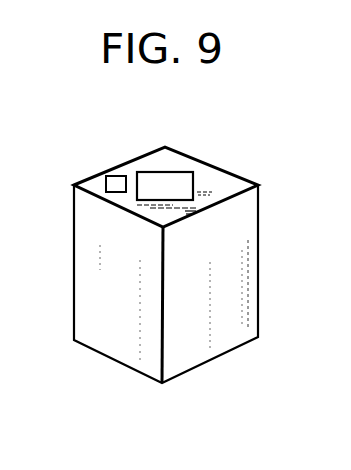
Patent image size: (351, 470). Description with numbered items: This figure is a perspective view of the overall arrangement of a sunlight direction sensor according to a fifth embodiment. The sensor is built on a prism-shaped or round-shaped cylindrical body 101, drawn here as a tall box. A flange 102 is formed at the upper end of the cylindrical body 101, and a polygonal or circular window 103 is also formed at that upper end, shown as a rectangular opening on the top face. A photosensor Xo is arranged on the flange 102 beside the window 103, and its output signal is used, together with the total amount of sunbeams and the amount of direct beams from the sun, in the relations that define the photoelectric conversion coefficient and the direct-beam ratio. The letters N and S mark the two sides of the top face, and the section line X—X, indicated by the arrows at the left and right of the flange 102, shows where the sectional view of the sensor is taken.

The cylindrical body 101 is at (258, 253).
The flange 102 is at (232, 180).
The window 103 is at (187, 172).
The north pole N is at (164, 133).
The south pole S is at (173, 238).
The photosensor Xo is at (116, 176).
The section line X— X is at (24, 179).